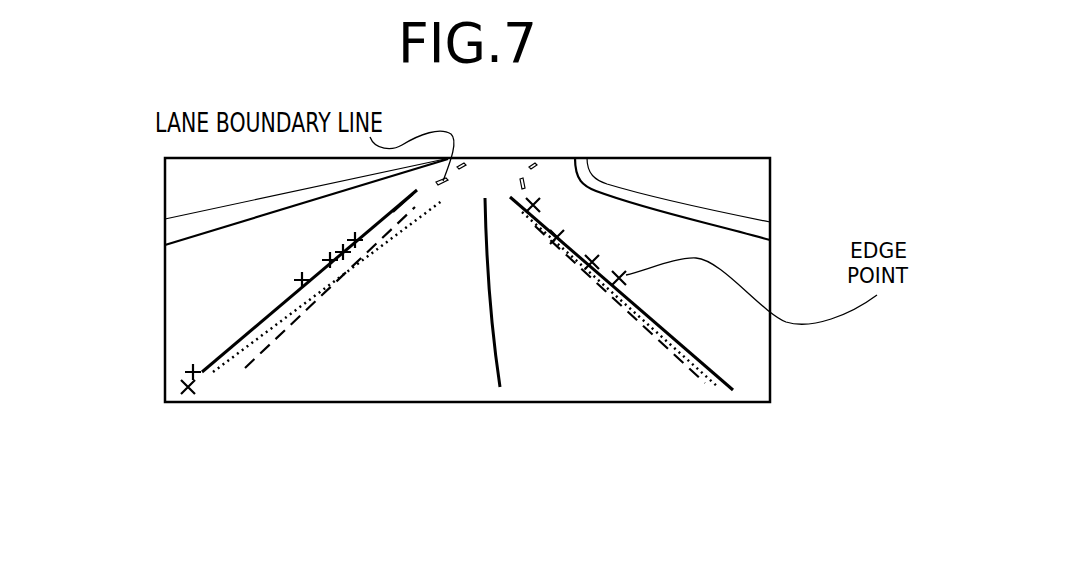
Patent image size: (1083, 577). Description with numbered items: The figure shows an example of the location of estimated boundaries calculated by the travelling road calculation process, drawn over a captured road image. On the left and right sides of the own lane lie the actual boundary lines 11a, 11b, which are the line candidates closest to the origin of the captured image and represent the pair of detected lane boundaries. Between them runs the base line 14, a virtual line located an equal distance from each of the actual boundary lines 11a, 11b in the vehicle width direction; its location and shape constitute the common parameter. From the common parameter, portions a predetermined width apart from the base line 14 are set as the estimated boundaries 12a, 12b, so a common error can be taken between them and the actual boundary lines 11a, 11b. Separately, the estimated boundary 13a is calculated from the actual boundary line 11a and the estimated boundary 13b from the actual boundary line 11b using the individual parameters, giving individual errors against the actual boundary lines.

The actual boundary line 11a is at (257, 323).
The estimated boundary 12a is at (245, 368).
The estimated boundary 13a is at (213, 373).
The base line 14 is at (493, 348).
The actual boundary line 11b is at (720, 373).
The estimated boundary 12b is at (670, 368).
The estimated boundary 13b is at (718, 387).